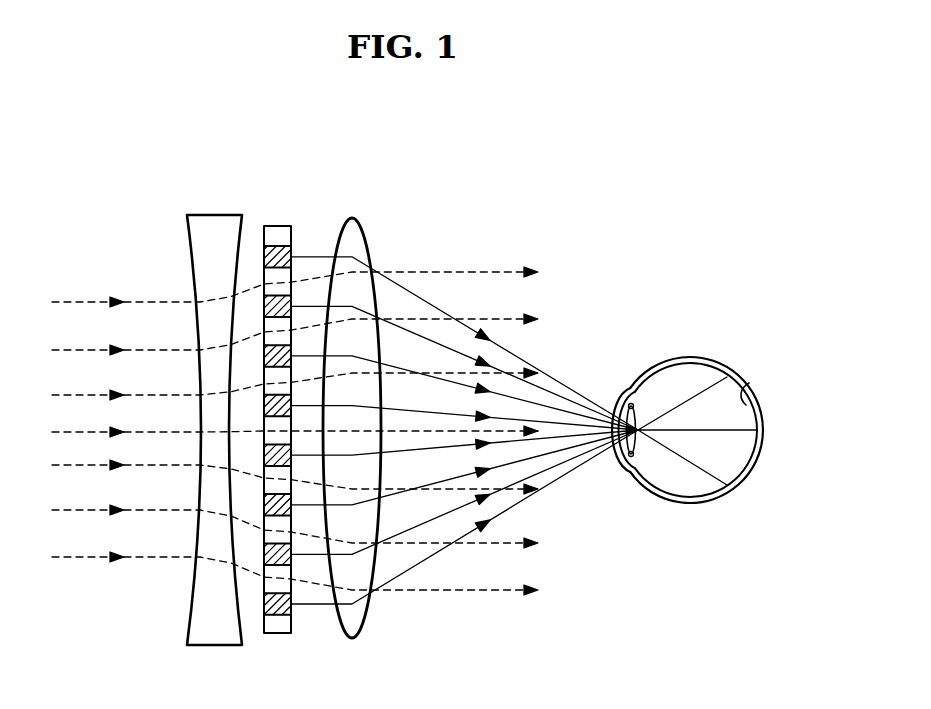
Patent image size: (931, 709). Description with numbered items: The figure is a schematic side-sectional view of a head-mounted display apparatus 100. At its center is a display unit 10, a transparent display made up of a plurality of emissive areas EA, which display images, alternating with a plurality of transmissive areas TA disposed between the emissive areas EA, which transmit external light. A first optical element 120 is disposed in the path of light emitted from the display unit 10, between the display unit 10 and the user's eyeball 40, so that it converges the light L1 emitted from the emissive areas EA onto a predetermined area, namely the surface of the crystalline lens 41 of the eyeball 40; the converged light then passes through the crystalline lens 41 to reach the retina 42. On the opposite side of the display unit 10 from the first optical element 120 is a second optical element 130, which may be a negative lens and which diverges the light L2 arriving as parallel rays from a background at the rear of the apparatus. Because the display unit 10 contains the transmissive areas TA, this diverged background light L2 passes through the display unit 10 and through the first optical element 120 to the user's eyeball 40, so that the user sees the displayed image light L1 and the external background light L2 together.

The head-mounted display apparatus 100 is at (556, 174).
The display unit 10 is at (277, 206).
The emissive areas EA is at (270, 256).
The transmissive areas TA is at (285, 276).
The first optical element 120 is at (352, 217).
The second optical element 130 is at (207, 220).
The light L1 is at (313, 607).
The light L2 is at (152, 557).
The user's eyeball 40 is at (716, 340).
The crystalline lens 41 is at (640, 397).
The retina 42 is at (750, 392).